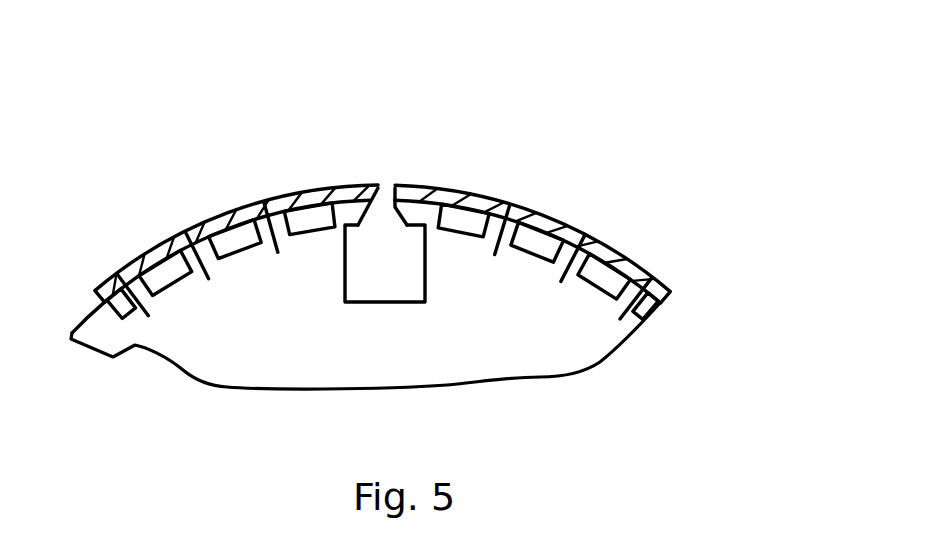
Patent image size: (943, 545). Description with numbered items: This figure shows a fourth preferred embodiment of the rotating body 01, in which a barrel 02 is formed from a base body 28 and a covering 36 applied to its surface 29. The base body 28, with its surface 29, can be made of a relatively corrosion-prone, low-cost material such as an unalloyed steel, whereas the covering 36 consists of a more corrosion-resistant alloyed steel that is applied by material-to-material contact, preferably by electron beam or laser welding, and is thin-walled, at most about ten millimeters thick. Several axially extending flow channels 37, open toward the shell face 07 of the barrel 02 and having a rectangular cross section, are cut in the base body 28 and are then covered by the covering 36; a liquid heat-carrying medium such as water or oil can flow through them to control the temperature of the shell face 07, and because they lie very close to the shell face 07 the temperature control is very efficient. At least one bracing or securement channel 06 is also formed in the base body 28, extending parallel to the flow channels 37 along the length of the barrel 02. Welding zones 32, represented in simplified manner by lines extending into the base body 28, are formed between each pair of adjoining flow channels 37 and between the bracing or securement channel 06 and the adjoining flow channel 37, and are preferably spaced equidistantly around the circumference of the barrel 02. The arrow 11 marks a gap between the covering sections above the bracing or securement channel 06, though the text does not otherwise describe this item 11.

The rotating body 01 is at (402, 42).
The barrel 02 is at (705, 335).
The bracing or securement channel 06 is at (348, 292).
The shell face 07 is at (305, 192).
The slot 11 is at (386, 187).
The base body 28 is at (535, 355).
The surface 29 is at (85, 311).
The welding zone 32 is at (567, 222).
The covering 36 is at (226, 213).
The flow channel 37 is at (160, 258).